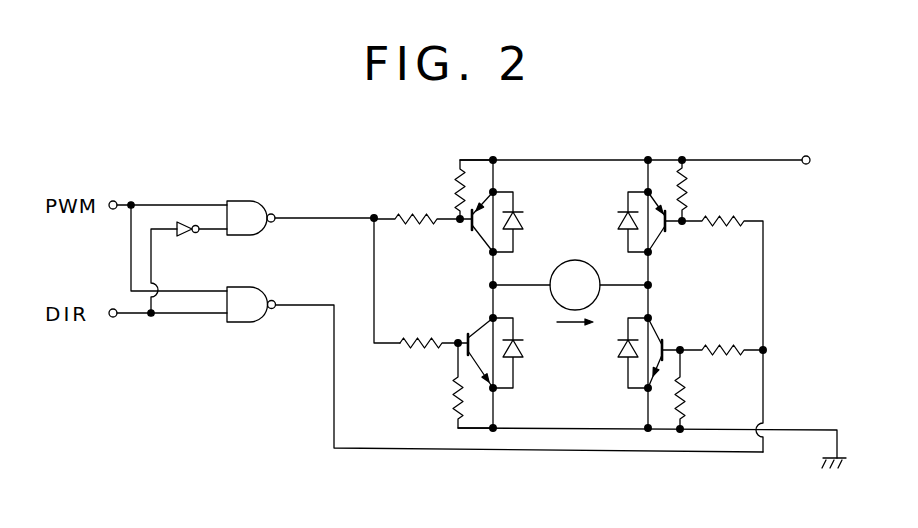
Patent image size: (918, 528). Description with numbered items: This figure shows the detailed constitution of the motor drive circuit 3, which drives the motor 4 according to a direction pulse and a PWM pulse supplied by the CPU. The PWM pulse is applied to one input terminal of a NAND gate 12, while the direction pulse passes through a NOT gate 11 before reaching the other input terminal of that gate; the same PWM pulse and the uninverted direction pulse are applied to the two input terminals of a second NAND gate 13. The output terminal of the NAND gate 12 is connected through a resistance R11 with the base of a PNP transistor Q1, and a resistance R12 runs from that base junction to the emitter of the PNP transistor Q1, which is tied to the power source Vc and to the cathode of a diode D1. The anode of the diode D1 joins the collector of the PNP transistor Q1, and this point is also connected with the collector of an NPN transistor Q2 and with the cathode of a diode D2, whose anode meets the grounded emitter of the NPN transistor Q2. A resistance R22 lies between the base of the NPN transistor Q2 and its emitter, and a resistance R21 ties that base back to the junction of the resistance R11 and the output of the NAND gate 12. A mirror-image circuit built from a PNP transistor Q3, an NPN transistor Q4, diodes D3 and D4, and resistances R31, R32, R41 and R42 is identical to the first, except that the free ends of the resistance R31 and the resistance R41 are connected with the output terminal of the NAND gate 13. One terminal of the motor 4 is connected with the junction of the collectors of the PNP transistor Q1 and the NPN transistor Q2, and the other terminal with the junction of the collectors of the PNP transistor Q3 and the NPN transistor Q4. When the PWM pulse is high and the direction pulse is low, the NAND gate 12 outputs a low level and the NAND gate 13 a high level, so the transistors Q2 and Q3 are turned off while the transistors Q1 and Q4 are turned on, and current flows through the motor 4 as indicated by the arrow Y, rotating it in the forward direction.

The motor drive circuit 3 is at (281, 467).
The motor 4 is at (574, 259).
The NOT gate 11 is at (187, 237).
The NAND gate 12 is at (250, 200).
The NAND gate 13 is at (257, 322).
The resistance R11 is at (423, 233).
The resistance R12 is at (453, 191).
The resistance R21 is at (433, 328).
The resistance R22 is at (447, 385).
The resistance R31 is at (722, 324).
The resistance R32 is at (704, 190).
The resistance R41 is at (723, 336).
The resistance R42 is at (702, 391).
The PNP transistor Q1 is at (467, 222).
The NPN transistor Q2 is at (471, 348).
The PNP transistor Q3 is at (668, 229).
The NPN transistor Q4 is at (666, 350).
The diode D1 is at (524, 222).
The diode D2 is at (524, 353).
The diode D3 is at (615, 222).
The diode D4 is at (609, 353).